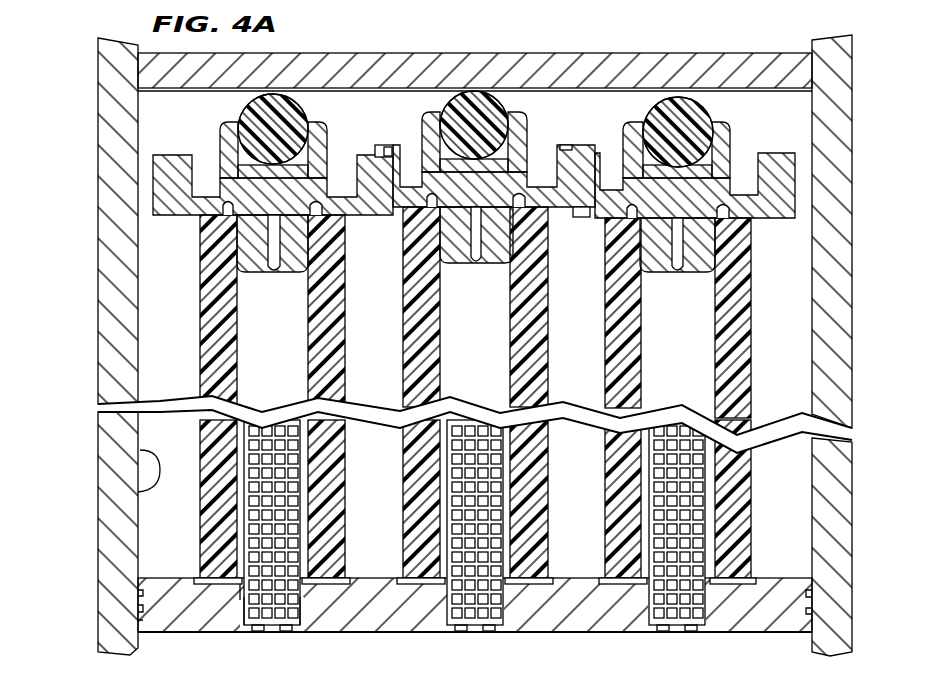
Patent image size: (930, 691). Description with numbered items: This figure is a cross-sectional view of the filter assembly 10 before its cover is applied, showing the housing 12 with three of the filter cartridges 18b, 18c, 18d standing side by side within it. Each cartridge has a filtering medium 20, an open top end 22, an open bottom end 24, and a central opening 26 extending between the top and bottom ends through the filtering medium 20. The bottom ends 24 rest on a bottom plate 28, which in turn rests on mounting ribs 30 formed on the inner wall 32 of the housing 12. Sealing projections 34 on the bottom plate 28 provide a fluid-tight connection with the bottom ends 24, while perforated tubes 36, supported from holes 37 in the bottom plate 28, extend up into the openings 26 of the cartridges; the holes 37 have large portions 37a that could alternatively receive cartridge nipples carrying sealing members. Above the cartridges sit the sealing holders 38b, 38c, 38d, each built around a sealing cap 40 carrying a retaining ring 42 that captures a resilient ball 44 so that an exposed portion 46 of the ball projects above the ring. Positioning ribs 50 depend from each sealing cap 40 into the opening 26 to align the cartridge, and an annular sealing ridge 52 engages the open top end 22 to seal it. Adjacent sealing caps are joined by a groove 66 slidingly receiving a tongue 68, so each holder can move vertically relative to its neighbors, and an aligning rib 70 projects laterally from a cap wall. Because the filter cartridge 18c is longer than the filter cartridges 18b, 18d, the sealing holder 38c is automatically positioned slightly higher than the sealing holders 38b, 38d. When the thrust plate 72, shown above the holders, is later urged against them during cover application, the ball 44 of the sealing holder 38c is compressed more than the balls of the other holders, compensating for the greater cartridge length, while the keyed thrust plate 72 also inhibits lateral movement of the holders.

The filter assembly 10 is at (86, 130).
The housing 12 is at (94, 352).
The filter cartridge 18b is at (752, 393).
The filter cartridge 18c is at (402, 392).
The filter cartridge 18d is at (378, 460).
The filtering medium 20 is at (205, 447).
The open top end 22 is at (340, 240).
The open bottom end 24 is at (205, 545).
The opening 26 is at (279, 396).
The bottom plate 28 is at (766, 578).
The mounting ribs 30 is at (142, 632).
The inner wall 32 is at (138, 485).
The sealing projections 34 is at (230, 584).
The perforated tubes 36 is at (270, 632).
The holes 37 is at (246, 625).
The large portions 37a is at (242, 598).
The sealing holder 38b is at (750, 130).
The sealing holder 38c is at (548, 128).
The sealing holder 38d is at (178, 228).
The sealing cap 40 is at (220, 158).
The retaining ring 42 is at (327, 140).
The resilient ball 44 is at (320, 100).
The exposed portion 46 is at (248, 102).
The positioning ribs 50 is at (285, 272).
The annular sealing ridge 52 is at (215, 230).
The groove 66 is at (384, 145).
The tongue 68 is at (384, 152).
The aligning rib 70 is at (153, 183).
The thrust plate 72 is at (656, 53).